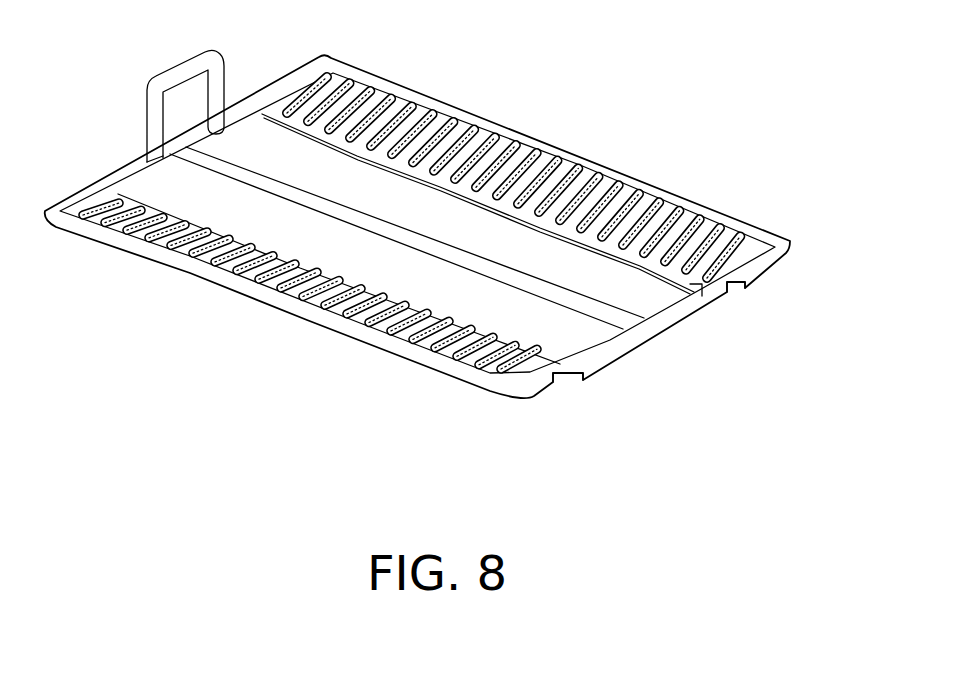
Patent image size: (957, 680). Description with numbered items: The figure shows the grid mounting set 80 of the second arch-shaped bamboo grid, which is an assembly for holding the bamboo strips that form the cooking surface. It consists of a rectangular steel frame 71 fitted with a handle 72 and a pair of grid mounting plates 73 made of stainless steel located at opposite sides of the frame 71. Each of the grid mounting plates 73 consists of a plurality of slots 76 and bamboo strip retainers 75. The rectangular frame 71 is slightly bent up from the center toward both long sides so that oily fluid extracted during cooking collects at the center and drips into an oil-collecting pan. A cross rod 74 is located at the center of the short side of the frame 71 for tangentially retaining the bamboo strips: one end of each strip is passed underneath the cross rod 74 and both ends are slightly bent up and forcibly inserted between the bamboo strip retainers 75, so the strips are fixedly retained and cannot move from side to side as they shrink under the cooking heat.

The grid mounting set 80 is at (213, 308).
The rectangular steel frame 71 is at (307, 318).
The handle 72 is at (178, 72).
The grid mounting plates 73 is at (545, 374).
The cross rod 74 is at (612, 322).
The bamboo strip retainers 75 is at (498, 140).
The slots 76 is at (630, 213).